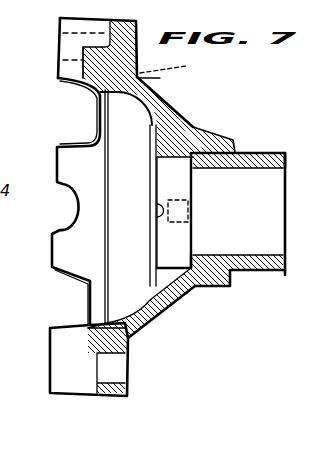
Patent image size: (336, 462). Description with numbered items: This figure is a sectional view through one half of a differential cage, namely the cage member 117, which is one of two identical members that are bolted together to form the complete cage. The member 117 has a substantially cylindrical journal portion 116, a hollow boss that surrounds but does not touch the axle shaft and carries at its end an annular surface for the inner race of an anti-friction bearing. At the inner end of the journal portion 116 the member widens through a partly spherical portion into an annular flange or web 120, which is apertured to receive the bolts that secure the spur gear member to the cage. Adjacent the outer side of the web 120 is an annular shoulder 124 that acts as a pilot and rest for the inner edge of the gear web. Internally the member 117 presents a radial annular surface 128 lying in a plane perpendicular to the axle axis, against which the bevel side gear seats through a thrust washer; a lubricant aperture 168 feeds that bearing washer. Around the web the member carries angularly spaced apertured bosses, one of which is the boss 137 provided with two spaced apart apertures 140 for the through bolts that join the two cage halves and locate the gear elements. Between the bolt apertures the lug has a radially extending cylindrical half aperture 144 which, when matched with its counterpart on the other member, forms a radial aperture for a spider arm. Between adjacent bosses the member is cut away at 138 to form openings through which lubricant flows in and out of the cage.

The apertured boss 137 is at (57, 47).
The radially extending cylindrical half aperture 144 is at (67, 70).
The cut away portion 138 is at (84, 118).
The apertures 140 is at (177, 72).
The lubricant aperture 168 is at (182, 121).
The cylindrical journal portion 116 is at (222, 133).
The radial annular surface 128 is at (143, 150).
The differential cage member 117 is at (212, 290).
The annular shoulder 124 is at (133, 350).
The annular flange or web 120 is at (104, 396).